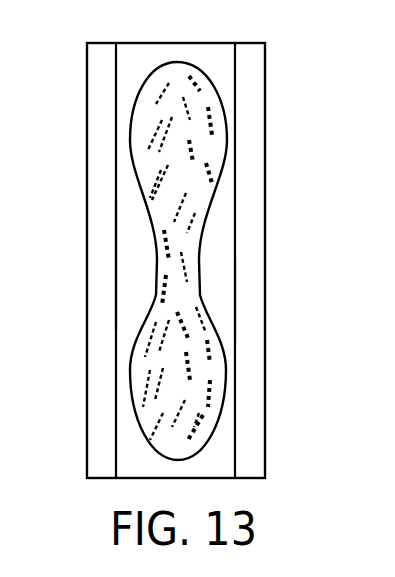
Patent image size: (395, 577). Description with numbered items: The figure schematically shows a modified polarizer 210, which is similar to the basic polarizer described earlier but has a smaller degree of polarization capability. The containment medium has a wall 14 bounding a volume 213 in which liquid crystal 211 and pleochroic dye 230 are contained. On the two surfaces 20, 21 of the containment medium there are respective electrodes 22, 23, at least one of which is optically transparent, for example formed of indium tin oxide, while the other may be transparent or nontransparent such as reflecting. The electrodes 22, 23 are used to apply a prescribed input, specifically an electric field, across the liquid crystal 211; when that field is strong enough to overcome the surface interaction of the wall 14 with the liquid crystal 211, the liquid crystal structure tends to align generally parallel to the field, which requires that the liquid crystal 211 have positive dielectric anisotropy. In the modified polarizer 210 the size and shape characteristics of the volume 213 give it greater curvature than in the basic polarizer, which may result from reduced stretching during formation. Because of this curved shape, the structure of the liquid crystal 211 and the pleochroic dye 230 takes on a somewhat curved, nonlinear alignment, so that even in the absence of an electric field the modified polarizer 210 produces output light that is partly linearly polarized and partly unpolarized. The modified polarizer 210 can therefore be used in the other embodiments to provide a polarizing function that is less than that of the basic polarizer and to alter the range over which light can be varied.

The wall 14 is at (215, 55).
The surface 20 is at (117, 270).
The surface 21 is at (238, 304).
The electrode 22 is at (85, 213).
The electrode 23 is at (268, 223).
The modified polarizer 210 is at (288, 260).
The liquid crystal 211 is at (210, 130).
The volume 213 is at (203, 197).
The pleochroic dye 230 is at (215, 106).